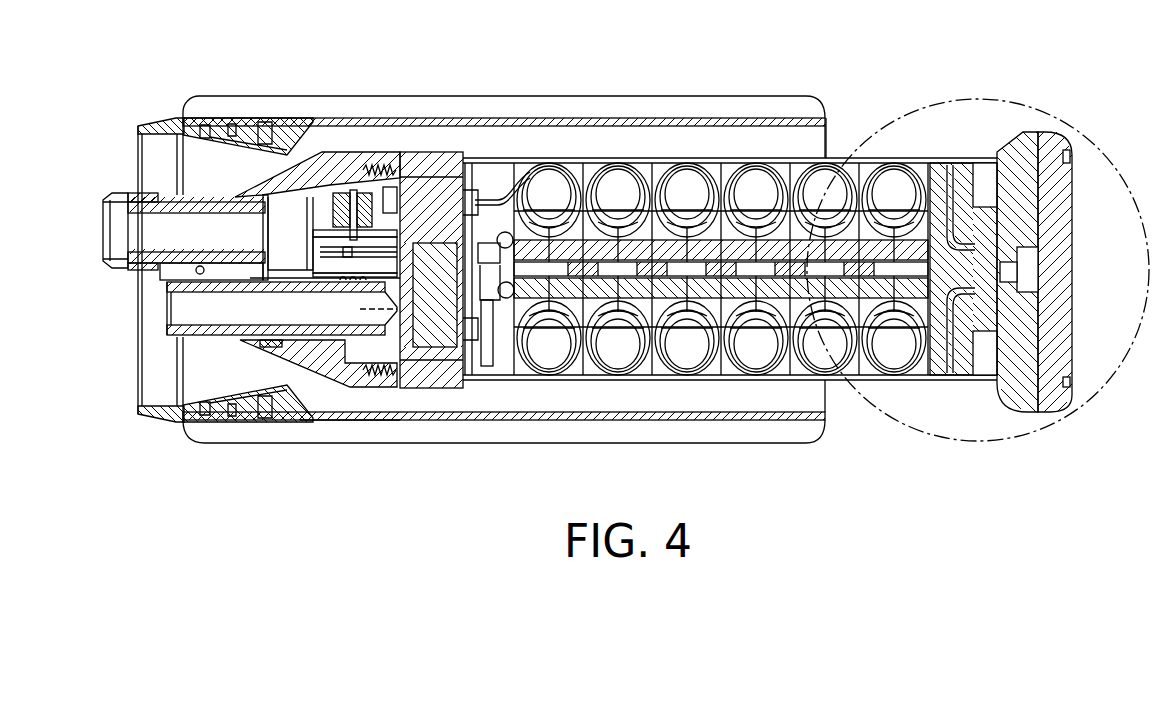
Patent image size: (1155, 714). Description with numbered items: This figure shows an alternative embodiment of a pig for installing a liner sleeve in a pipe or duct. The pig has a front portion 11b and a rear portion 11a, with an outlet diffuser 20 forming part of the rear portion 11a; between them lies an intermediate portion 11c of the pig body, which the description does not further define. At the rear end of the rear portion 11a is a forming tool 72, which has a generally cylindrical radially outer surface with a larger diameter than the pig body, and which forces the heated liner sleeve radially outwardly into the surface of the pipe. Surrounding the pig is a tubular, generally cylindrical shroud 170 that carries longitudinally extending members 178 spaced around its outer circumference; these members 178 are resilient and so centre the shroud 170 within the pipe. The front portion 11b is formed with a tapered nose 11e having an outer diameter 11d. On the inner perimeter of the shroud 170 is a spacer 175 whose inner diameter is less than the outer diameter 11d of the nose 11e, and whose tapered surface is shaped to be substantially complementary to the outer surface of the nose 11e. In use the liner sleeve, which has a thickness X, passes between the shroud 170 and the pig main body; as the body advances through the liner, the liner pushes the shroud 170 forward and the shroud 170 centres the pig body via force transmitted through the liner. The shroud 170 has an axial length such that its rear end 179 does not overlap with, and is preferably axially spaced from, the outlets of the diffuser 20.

The shroud 170 is at (142, 121).
The spacer 175 is at (288, 128).
The longitudinally extending members 178 is at (579, 110).
The shroud rear end 179 is at (828, 118).
The outlet diffuser 20 is at (971, 127).
The forming tool 72 is at (1050, 130).
The rear portion 11a is at (1032, 442).
The front portion 11b is at (406, 393).
The battery frame 11c is at (840, 383).
The outer diameter 11d is at (347, 387).
The tapered nose 11e is at (250, 343).
The thickness X is at (352, 427).